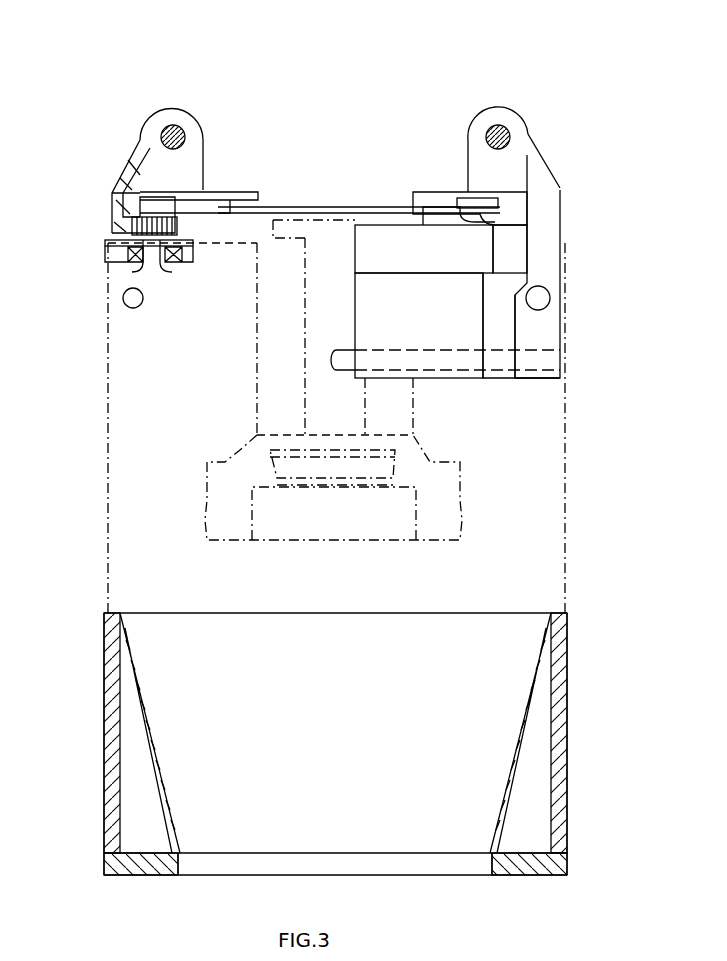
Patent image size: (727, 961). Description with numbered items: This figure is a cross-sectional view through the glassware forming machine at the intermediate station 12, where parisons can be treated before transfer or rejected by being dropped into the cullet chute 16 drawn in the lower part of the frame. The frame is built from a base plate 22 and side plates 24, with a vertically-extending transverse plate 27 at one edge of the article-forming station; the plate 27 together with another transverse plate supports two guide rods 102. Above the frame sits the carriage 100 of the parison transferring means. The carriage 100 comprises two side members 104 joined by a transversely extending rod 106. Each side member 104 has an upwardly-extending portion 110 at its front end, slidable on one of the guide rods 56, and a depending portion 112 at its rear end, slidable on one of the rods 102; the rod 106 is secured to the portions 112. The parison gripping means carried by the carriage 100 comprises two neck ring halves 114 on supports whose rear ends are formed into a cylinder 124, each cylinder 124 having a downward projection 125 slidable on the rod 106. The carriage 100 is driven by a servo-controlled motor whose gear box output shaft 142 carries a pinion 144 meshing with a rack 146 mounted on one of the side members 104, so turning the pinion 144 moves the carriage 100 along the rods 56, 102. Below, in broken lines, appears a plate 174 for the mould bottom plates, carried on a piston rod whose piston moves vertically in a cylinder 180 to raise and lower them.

The intermediate station 12 is at (335, 82).
The cullet chute 16 is at (506, 760).
The base plate 22 is at (525, 868).
The side plates 24 is at (112, 712).
The transverse plate 27 is at (130, 483).
The guide rods 56 is at (178, 128).
The carriage 100 is at (446, 156).
The guide rods 102 is at (143, 298).
The side members 104 is at (120, 185).
The transversely extending rod 106 is at (497, 365).
The upwardly-extending portion 110 is at (150, 140).
The depending portion 112 is at (552, 330).
The neck ring halves 114 is at (345, 207).
The cylinder 124 is at (448, 256).
The downward projection 125 is at (448, 323).
The output shaft 142 is at (162, 250).
The pinion 144 is at (130, 250).
The rack 146 is at (125, 228).
The plate 174 is at (400, 450).
The cylinder 180 is at (405, 525).